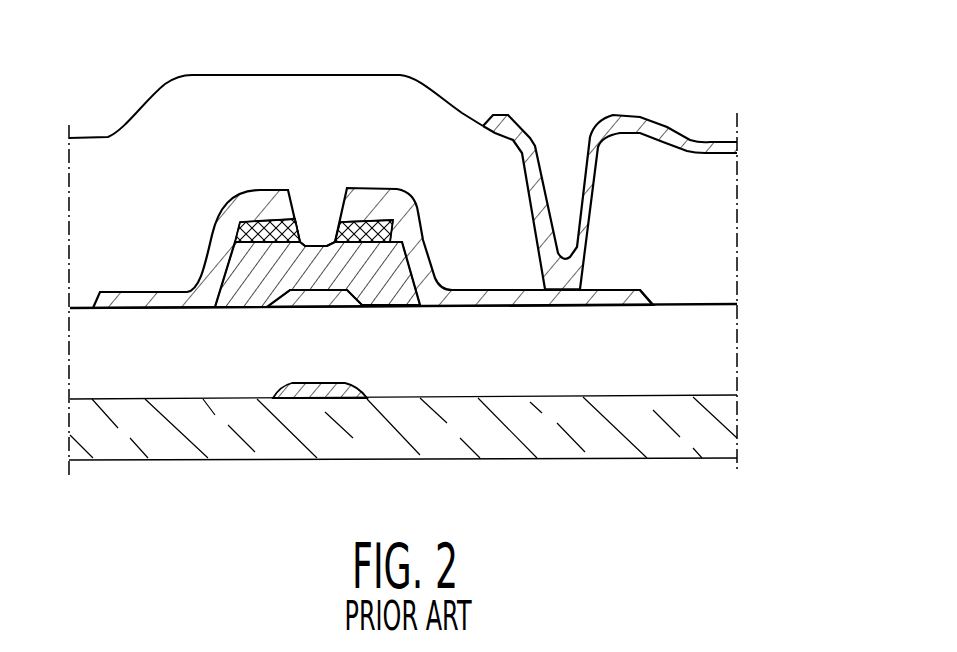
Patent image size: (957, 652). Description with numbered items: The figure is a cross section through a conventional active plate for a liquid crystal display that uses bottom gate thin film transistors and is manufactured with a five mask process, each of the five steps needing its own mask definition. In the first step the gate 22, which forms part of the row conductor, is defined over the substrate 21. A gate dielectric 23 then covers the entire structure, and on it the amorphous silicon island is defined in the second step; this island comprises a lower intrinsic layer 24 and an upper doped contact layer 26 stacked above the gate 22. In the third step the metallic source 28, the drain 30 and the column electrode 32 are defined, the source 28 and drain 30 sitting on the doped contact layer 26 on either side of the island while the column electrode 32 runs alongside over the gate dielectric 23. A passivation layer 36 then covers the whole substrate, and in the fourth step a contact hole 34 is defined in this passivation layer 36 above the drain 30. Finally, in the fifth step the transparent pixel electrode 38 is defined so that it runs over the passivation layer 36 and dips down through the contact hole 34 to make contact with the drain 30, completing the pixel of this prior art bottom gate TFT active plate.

The substrate 21 is at (542, 438).
The gate 22 is at (310, 393).
The gate dielectric 23 is at (713, 355).
The lower intrinsic layer 24 is at (237, 263).
The upper doped contact layer 26 is at (252, 223).
The source 28 is at (277, 197).
The drain 30 is at (447, 290).
The column electrode 32 is at (108, 298).
The contact hole 34 is at (572, 114).
The passivation layer 36 is at (713, 218).
The transparent pixel electrode 38 is at (662, 124).